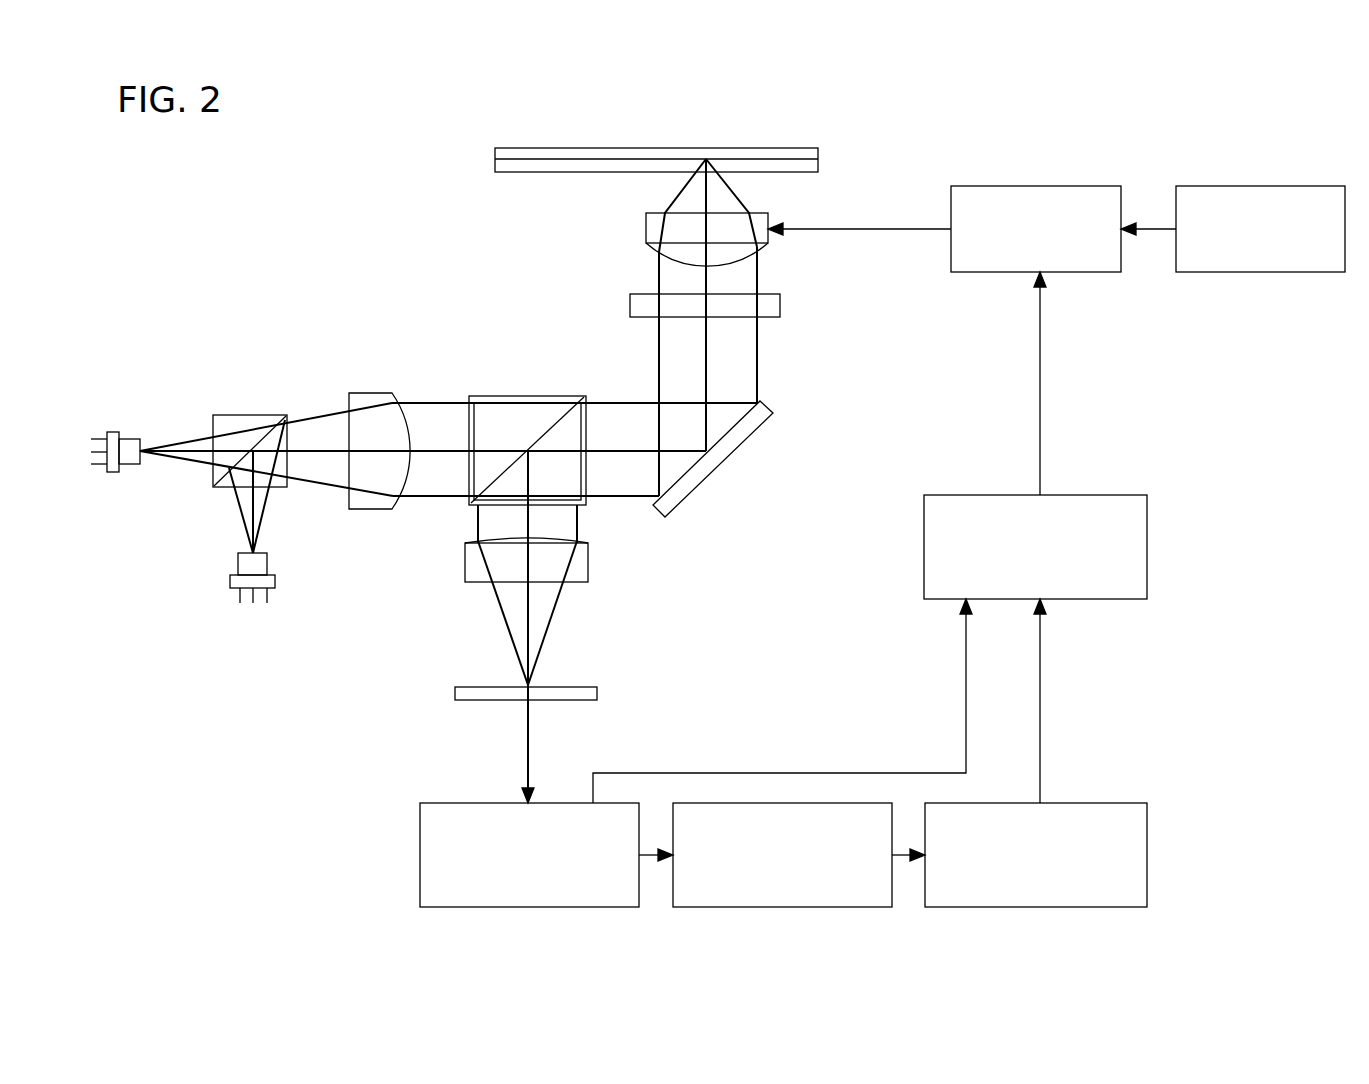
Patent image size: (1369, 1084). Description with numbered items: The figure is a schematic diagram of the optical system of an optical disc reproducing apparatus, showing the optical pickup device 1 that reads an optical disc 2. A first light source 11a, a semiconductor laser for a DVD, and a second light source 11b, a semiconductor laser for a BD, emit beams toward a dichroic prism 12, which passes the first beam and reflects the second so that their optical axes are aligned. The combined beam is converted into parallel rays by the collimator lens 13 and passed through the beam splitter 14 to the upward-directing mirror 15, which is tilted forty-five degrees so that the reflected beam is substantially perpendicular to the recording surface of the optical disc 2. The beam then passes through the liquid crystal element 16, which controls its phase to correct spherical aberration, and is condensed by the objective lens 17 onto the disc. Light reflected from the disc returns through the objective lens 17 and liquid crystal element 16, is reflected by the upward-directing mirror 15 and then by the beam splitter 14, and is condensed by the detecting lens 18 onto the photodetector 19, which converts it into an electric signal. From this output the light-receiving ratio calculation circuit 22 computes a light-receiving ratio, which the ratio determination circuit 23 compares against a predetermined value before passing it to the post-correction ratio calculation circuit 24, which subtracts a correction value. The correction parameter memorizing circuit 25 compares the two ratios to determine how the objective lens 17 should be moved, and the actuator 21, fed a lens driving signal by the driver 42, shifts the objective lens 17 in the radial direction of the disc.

The optical pickup device 1 is at (382, 272).
The optical disc 2 is at (790, 173).
The first light source 11a is at (113, 428).
The second light source 11b is at (275, 585).
The dichroic prism 12 is at (260, 417).
The collimator lens 13 is at (377, 392).
The beam splitter 14 is at (530, 396).
The upward-directing mirror 15 is at (712, 470).
The liquid crystal element 16 is at (772, 317).
The objective lens 17 is at (763, 243).
The detecting lens 18 is at (583, 583).
The photodetector 19 is at (583, 697).
The actuator 21 is at (508, 162).
The light-receiving ratio calculation circuit 22 is at (560, 907).
The ratio determination circuit 23 is at (785, 907).
The post-correction ratio calculation circuit 24 is at (1040, 907).
The correction parameter memorizing circuit 25 is at (1082, 599).
The driver 42 is at (1248, 272).